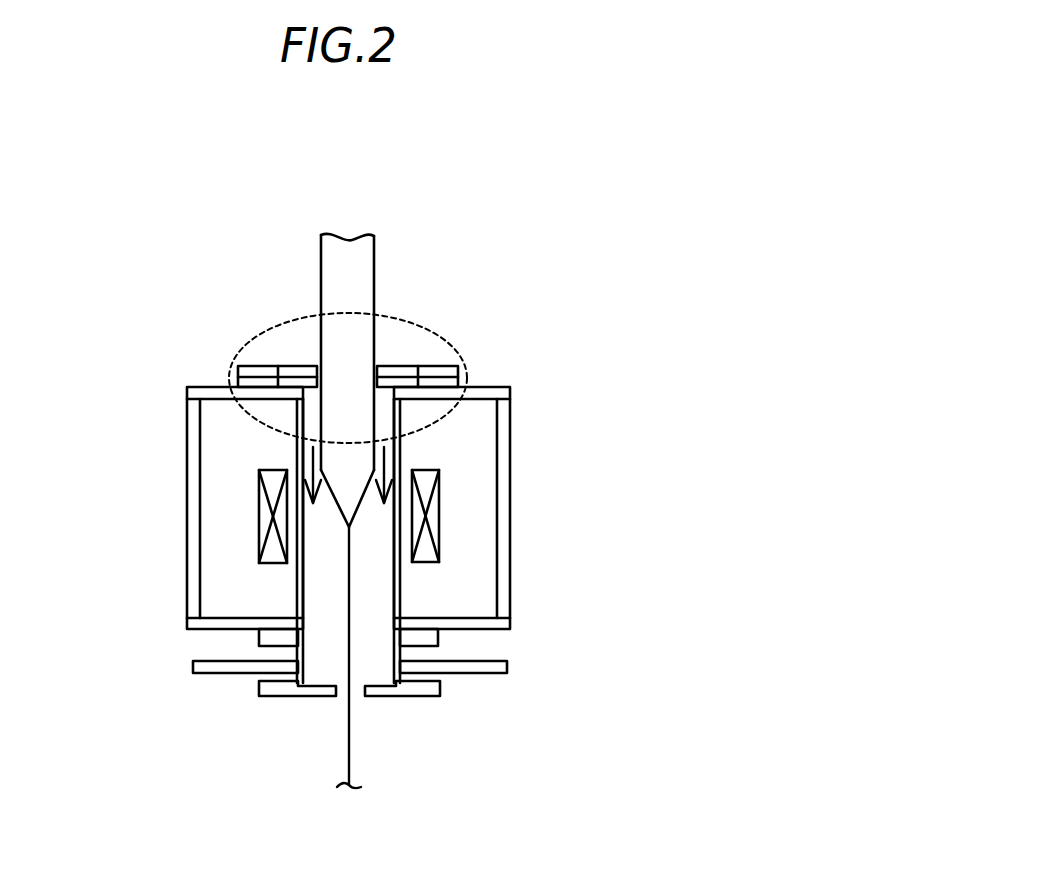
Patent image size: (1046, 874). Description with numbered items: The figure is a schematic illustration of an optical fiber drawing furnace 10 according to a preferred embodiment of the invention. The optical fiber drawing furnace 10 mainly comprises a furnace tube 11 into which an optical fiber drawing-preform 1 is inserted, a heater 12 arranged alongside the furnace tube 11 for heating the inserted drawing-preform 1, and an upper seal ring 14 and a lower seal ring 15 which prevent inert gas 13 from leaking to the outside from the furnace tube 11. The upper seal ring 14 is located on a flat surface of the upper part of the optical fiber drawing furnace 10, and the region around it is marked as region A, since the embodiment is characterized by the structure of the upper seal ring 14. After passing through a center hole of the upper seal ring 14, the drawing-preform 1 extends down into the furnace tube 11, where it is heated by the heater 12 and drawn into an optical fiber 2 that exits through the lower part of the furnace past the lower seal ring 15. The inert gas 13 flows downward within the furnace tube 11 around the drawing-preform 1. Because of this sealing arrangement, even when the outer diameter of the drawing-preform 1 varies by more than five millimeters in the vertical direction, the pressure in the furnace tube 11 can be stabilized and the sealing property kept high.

The optical fiber drawing furnace 10 is at (424, 227).
The optical fiber drawing-preform 1 is at (362, 285).
The region A (upper seal region) A is at (413, 323).
The upper seal ring 14 is at (427, 370).
The inert gas 13 is at (404, 468).
The heater 12 is at (435, 513).
The furnace tube 11 is at (395, 597).
The lower seal ring 15 is at (312, 692).
The optical fiber 2 is at (352, 763).